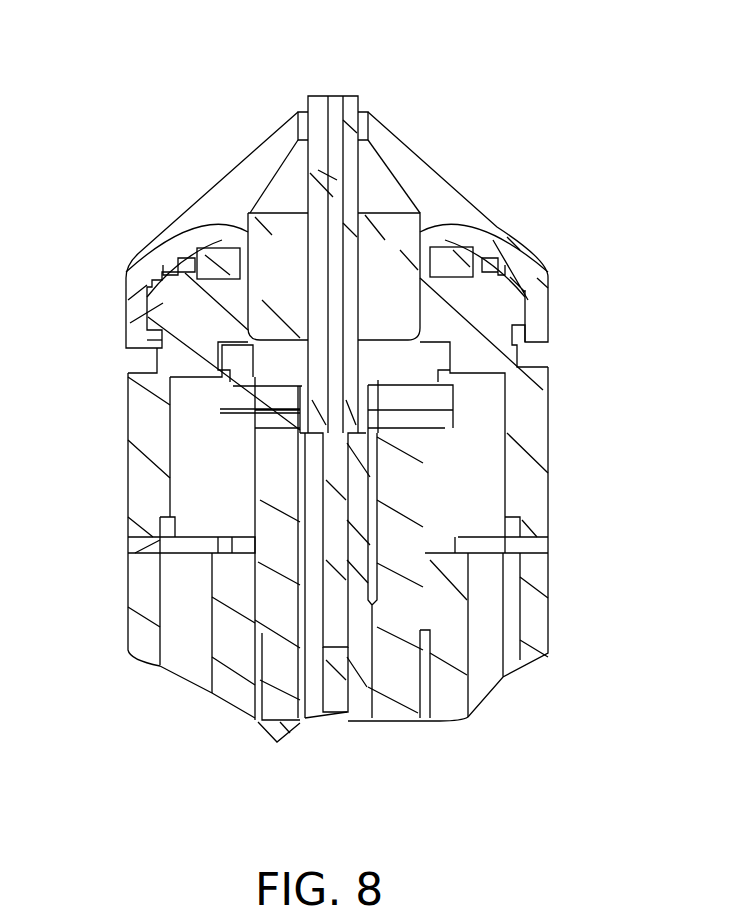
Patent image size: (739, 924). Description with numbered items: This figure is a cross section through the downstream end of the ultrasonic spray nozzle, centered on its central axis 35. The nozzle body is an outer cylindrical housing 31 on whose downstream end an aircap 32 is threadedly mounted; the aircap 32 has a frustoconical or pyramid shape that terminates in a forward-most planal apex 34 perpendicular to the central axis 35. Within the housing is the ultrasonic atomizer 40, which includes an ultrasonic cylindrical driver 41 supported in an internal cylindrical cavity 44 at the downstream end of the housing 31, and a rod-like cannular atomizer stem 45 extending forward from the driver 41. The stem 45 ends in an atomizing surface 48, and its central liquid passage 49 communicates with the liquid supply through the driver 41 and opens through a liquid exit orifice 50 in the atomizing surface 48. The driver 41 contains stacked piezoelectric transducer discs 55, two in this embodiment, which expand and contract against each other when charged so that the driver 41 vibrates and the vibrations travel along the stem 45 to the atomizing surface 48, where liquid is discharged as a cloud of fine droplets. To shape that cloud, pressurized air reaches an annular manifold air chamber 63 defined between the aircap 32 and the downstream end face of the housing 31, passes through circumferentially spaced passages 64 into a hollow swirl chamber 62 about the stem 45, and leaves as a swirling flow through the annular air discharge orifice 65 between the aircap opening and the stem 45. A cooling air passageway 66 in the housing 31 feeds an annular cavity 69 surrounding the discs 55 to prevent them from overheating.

The outer cylindrical housing 31 is at (147, 588).
The aircap 32 is at (480, 184).
The planal apex 34 is at (369, 112).
The central axis 35 is at (200, 450).
The ultrasonic atomizer 40 is at (432, 497).
The ultrasonic cylindrical driver 41 is at (413, 443).
The internal cylindrical cavity 44 is at (257, 600).
The cannular atomizer stem 45 is at (360, 175).
The atomizing surface 48 is at (318, 96).
The central liquid passage 49 is at (300, 140).
The liquid exit orifice 50 is at (338, 96).
The piezoelectric transducer discs 55 is at (450, 399).
The swirl chamber 62 is at (252, 222).
The annular manifold air chamber 63 is at (163, 273).
The circumferentially spaced passages 64 is at (245, 211).
The annular air discharge orifice 65 is at (300, 112).
The cooling air passageway 66 is at (180, 590).
The annular cavity 69 is at (183, 485).